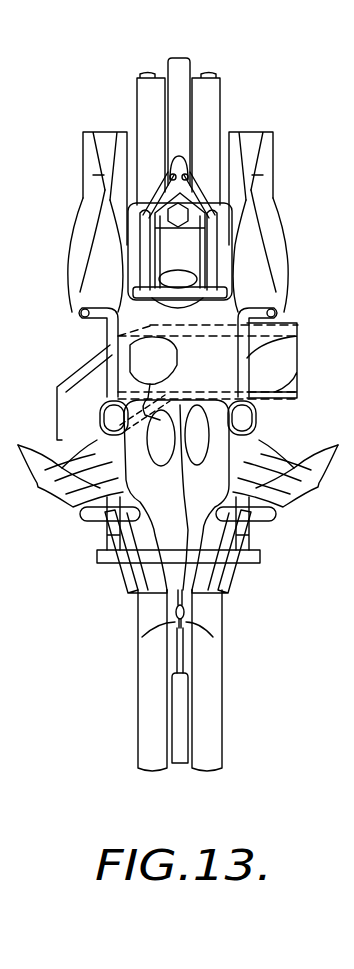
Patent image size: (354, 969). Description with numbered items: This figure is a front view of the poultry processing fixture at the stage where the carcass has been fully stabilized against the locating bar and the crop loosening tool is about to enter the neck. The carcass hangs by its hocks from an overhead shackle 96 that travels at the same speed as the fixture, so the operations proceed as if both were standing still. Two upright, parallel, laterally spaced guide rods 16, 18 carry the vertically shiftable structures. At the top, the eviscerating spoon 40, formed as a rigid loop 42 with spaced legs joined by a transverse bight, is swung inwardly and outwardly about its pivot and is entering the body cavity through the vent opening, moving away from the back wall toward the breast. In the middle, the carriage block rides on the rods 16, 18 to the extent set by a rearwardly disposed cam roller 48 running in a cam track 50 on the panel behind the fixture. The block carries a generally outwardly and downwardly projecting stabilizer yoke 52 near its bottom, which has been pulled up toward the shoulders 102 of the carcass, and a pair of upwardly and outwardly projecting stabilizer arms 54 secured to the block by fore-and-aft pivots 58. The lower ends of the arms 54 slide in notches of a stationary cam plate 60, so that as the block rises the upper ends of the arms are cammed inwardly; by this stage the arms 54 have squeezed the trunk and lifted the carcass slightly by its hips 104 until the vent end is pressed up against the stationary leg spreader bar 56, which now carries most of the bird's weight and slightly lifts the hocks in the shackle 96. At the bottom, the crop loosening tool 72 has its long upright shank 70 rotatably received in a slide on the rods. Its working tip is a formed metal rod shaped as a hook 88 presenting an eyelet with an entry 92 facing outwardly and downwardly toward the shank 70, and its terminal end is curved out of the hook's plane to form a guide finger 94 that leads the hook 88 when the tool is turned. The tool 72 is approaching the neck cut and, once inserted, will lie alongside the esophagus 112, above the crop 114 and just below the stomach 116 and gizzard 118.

The guide rod 16 is at (140, 90).
The guide rod 18 is at (213, 90).
The eviscerating spoon 40 is at (193, 122).
The overhead shackle 96 is at (88, 156).
The rigid loop 42 is at (147, 238).
The leg spreader bar 56 is at (225, 257).
The stabilizer arms 54 is at (88, 310).
The hips 104 is at (107, 348).
The cam roller 48 is at (56, 392).
The cam track 50 is at (297, 368).
The gizzard 118 is at (162, 378).
The stomach 116 is at (123, 389).
The fore-and-aft pivots 58 is at (60, 441).
The esophagus 112 is at (184, 492).
The shoulders 102 is at (110, 542).
The stabilizer yoke 52 is at (287, 517).
The cam plate 60 is at (100, 557).
The crop 114 is at (232, 578).
The crop loosening tool 72 is at (168, 666).
The shank 70 is at (182, 745).
The entry 92 is at (187, 641).
The hook 88 is at (167, 627).
The guide finger 94 is at (186, 630).